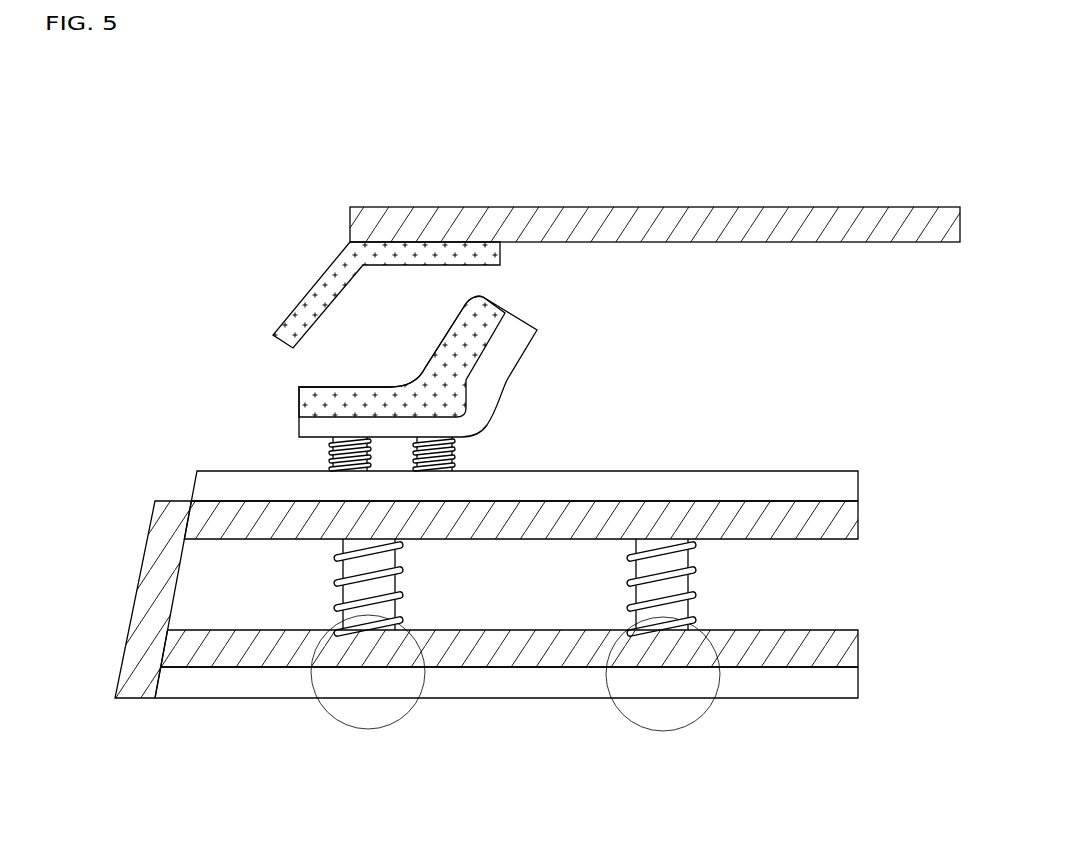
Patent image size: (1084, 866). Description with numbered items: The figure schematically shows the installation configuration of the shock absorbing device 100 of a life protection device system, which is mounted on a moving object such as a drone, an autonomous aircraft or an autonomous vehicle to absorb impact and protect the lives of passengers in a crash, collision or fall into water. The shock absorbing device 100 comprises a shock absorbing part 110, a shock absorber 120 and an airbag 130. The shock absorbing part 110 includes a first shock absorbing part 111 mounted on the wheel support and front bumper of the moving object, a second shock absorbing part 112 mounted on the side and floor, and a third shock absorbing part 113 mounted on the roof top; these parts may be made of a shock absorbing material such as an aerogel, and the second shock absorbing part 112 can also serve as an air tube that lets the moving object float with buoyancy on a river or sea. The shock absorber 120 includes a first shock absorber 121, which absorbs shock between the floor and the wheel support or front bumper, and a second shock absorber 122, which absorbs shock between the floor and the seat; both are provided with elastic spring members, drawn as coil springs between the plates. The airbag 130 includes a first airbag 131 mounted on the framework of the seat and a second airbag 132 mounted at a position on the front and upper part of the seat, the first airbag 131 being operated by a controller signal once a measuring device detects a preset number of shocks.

The shock absorbing device 100 is at (180, 168).
The shock absorbing part 110 is at (272, 788).
The first shock absorbing part 111 is at (190, 655).
The second shock absorbing part 112 is at (285, 527).
The third shock absorbing part 113 is at (358, 222).
The shock absorber 120 is at (408, 614).
The first shock absorber 121 is at (397, 567).
The second shock absorber 122 is at (330, 455).
The airbag 130 is at (147, 284).
The first airbag 131 is at (307, 403).
The second airbag 132 is at (323, 283).